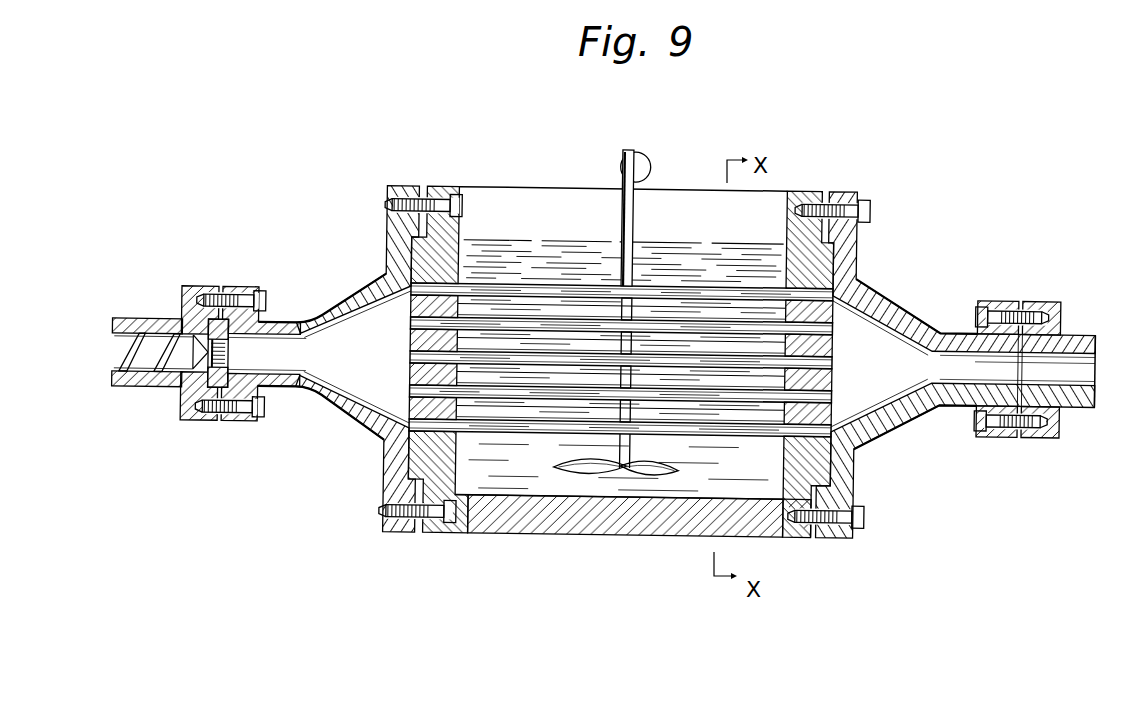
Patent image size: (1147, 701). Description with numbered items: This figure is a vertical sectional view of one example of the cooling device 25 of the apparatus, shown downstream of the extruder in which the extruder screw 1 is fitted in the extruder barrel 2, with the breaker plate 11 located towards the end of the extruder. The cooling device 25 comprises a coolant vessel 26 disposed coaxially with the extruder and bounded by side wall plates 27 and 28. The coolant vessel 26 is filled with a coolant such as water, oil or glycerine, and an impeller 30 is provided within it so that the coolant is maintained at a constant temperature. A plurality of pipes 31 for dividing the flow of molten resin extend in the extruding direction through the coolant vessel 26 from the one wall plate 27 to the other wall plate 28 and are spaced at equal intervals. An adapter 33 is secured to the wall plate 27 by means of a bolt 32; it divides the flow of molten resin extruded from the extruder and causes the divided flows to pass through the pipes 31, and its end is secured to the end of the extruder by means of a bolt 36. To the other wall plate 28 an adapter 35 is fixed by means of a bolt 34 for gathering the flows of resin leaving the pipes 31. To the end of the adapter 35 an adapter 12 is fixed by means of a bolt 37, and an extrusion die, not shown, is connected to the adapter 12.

The extruder screw 1 is at (150, 340).
The extruder barrel 2 is at (137, 325).
The breaker plate 11 is at (292, 327).
The adapter 12 is at (1054, 334).
The cooling device 25 is at (466, 503).
The coolant vessel 26 is at (667, 510).
The side wall plate 27 is at (457, 240).
The side wall plate 28 is at (840, 262).
The impeller 30 is at (617, 462).
The pipes 31 is at (505, 285).
The bolt 32 is at (405, 192).
The adapter 33 is at (349, 296).
The bolt 34 is at (837, 203).
The adapter 35 is at (919, 328).
The bolt 36 is at (249, 302).
The bolt 37 is at (999, 317).